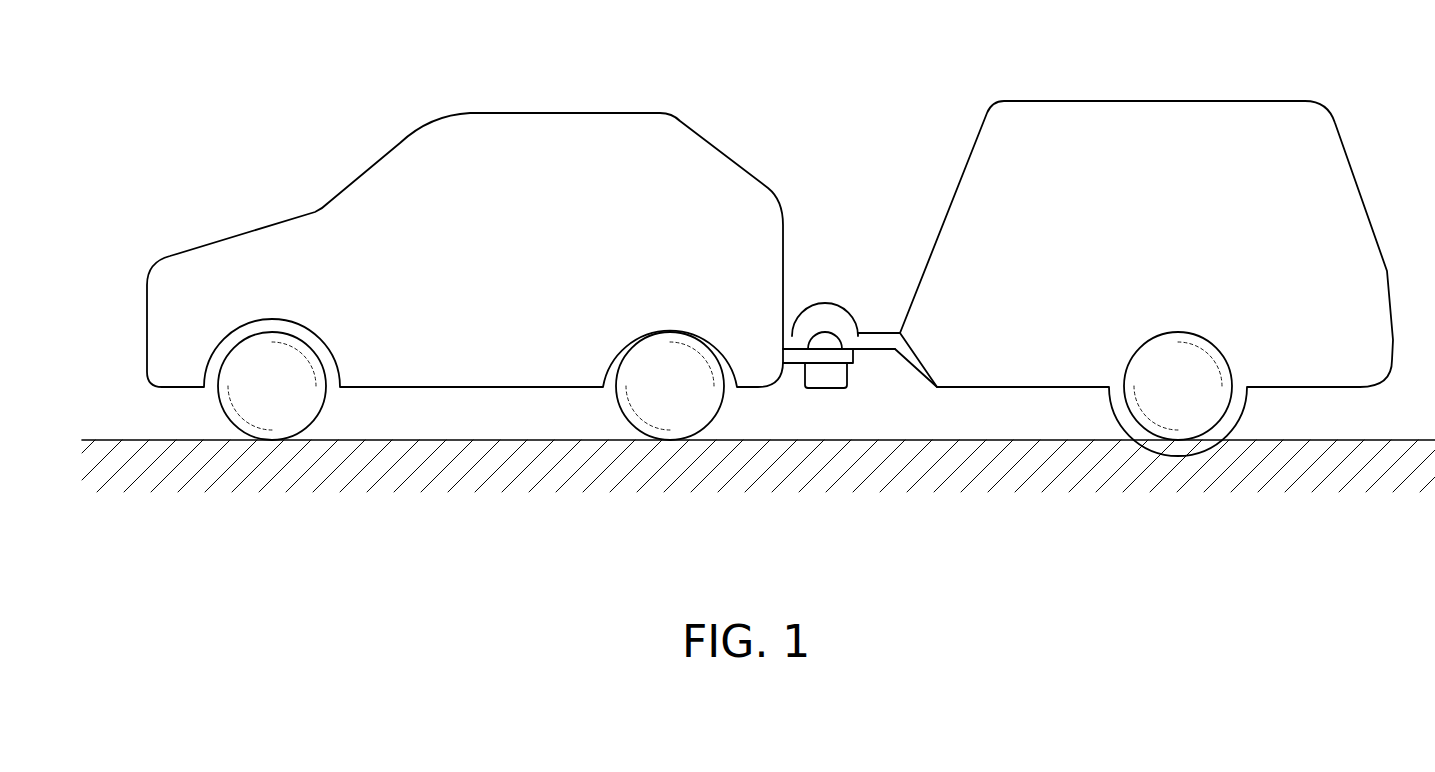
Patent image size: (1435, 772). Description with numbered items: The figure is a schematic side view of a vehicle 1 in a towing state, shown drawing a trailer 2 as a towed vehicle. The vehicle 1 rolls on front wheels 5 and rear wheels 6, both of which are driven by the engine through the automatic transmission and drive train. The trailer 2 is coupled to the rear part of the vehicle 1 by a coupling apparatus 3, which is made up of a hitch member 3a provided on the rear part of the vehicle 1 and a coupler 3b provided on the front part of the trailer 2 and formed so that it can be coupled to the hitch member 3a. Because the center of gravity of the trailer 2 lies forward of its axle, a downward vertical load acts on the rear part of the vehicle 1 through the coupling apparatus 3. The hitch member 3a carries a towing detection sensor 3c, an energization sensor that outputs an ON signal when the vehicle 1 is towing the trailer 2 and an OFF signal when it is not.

The vehicle 1 is at (570, 111).
The trailer 2 is at (1161, 96).
The coupling apparatus 3 is at (844, 323).
The hitch member 3a is at (858, 364).
The coupler 3b is at (843, 328).
The towing detection sensor 3c is at (803, 392).
The front wheels 5 is at (212, 401).
The rear wheels 6 is at (615, 396).